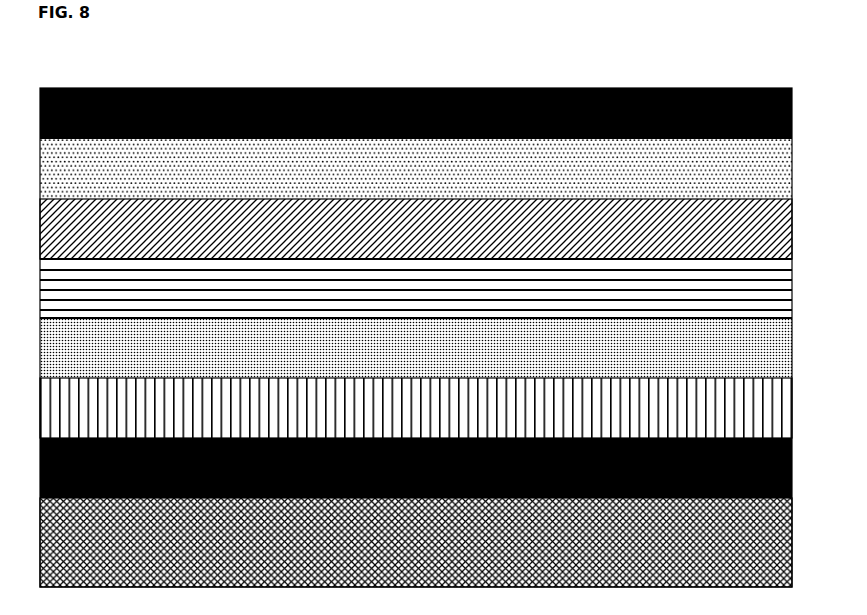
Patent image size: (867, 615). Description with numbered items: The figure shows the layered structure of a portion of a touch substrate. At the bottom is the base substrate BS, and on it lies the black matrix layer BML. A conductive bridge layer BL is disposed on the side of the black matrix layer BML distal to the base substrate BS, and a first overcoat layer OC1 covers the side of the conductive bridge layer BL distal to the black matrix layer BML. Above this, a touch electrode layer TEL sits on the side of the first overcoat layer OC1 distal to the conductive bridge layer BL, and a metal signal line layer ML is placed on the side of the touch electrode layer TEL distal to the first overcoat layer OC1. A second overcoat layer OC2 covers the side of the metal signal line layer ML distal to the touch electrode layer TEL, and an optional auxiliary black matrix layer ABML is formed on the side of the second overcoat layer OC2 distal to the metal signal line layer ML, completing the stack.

The auxiliary black matrix layer ABML is at (416, 115).
The second overcoat layer OC2 is at (416, 169).
The metal signal line layer ML is at (416, 231).
The touch electrode layer TEL is at (416, 288).
The first overcoat layer OC1 is at (416, 348).
The conductive bridge layer BL is at (416, 409).
The black matrix layer BML is at (416, 466).
The base substrate BS is at (416, 542).